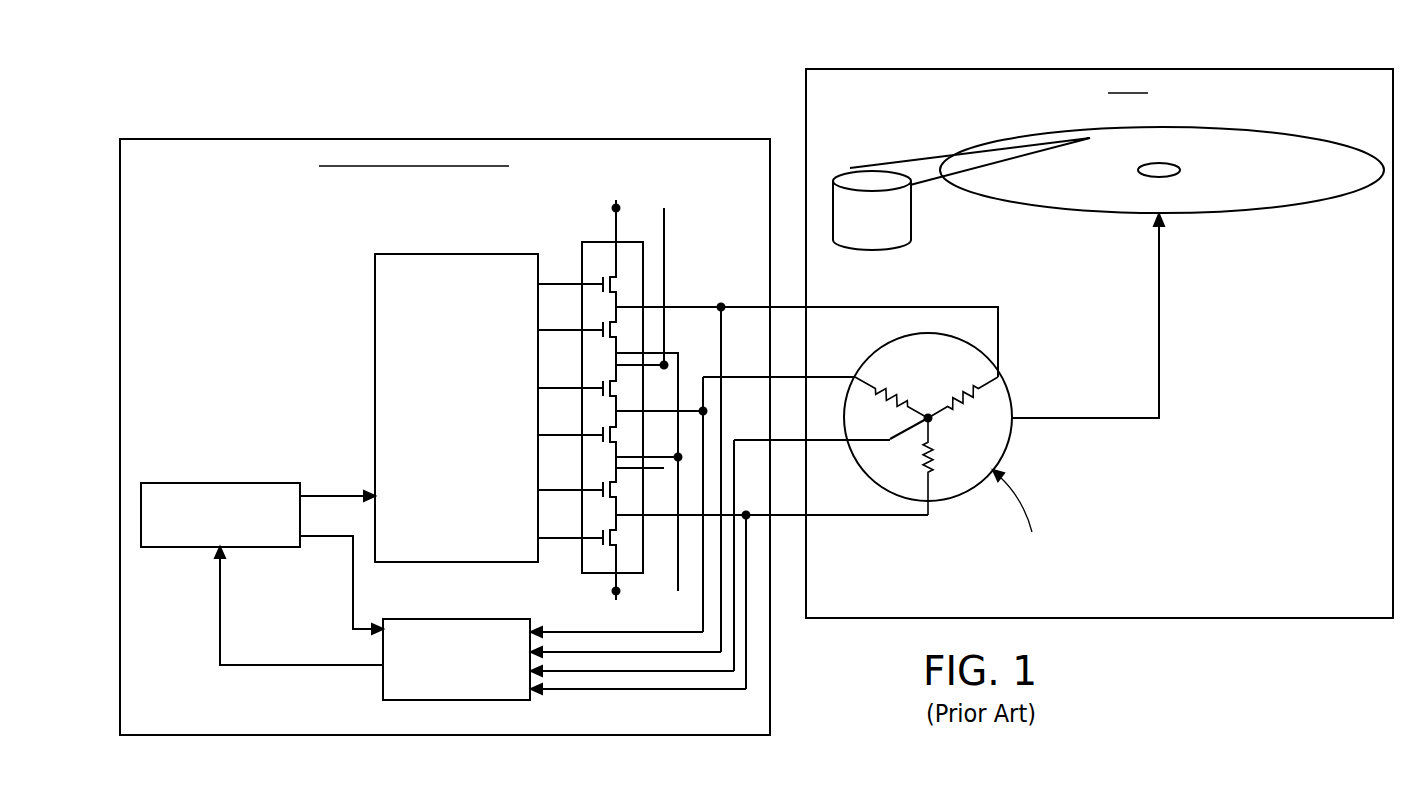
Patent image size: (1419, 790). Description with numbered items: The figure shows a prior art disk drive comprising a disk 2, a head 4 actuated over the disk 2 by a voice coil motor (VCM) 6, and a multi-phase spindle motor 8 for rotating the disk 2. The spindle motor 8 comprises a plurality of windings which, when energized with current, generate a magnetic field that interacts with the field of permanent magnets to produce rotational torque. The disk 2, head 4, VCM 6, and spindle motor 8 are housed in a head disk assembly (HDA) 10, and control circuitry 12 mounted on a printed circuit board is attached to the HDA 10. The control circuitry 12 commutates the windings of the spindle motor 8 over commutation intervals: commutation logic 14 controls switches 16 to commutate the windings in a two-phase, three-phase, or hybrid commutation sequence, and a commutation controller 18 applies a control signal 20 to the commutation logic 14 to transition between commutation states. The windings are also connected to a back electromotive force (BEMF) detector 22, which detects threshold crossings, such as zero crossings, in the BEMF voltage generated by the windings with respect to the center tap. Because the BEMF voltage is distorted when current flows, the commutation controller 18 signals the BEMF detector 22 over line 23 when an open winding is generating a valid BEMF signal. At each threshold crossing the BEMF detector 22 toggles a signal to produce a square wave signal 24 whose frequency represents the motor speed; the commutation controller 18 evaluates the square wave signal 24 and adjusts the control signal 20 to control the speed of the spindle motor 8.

The disk 2 is at (1270, 213).
The head 4 is at (1089, 148).
The voice coil motor (VCM) 6 is at (869, 247).
The multi-phase spindle motor 8 is at (1011, 440).
The head disk assembly (HDA) 10 is at (1030, 69).
The control circuitry 12 is at (255, 139).
The commutation logic 14 is at (373, 339).
The switches 16 is at (600, 242).
The commutation controller 18 is at (218, 483).
The control signal 20 is at (330, 496).
The back electromotive force (BEMF) detector 22 is at (456, 619).
The line 23 is at (355, 583).
The square wave signal 24 is at (284, 665).